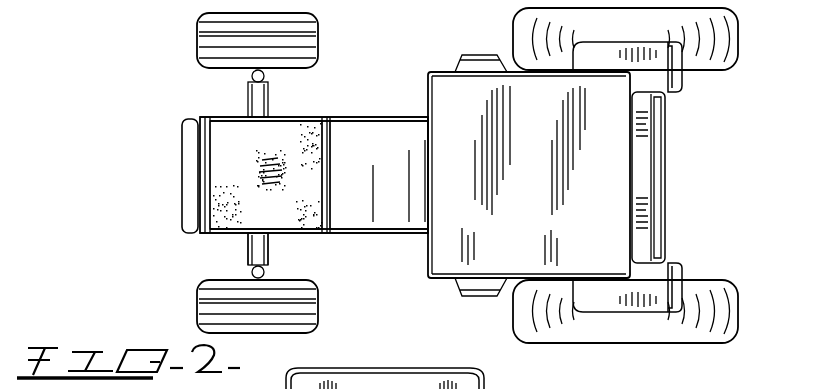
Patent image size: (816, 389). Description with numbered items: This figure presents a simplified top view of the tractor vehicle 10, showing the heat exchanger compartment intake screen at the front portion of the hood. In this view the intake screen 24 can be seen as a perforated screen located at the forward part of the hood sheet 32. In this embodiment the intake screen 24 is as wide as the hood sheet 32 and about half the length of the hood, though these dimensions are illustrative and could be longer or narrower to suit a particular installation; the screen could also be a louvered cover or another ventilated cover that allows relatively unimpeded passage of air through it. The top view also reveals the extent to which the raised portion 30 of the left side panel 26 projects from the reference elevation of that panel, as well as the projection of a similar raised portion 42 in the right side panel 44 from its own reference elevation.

The tractor vehicle 10 is at (438, 198).
The intake screen 24 is at (273, 143).
The left side panel 26 is at (212, 236).
The raised portion 30 is at (233, 237).
The hood sheet 32 is at (365, 148).
The raised portion 42 is at (228, 117).
The right side panel 44 is at (207, 118).